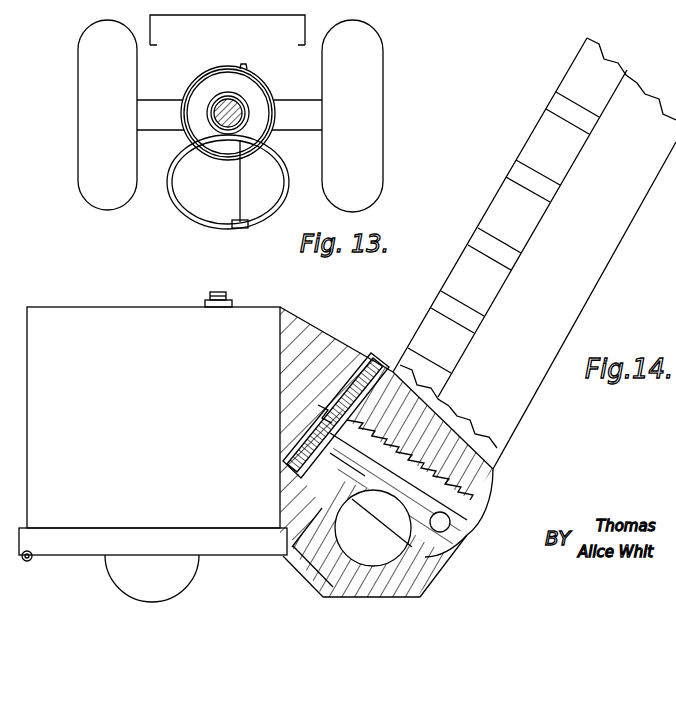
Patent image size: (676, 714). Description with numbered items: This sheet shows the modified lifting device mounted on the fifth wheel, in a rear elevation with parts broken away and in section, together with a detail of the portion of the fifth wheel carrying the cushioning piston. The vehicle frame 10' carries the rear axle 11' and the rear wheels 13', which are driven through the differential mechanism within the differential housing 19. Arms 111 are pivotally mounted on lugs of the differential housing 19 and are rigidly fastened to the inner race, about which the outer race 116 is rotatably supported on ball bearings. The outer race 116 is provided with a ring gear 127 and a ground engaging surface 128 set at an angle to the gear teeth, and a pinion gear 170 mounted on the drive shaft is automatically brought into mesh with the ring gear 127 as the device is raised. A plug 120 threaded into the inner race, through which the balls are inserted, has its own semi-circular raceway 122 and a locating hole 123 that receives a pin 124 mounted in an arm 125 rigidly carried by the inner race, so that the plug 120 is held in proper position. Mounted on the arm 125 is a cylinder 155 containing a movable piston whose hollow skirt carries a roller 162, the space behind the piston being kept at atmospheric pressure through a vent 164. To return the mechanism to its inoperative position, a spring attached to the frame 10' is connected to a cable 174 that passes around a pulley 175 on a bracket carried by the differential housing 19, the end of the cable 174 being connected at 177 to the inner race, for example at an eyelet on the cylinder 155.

In FIG. 13, the frame 10' is at (294, 27).
In FIG. 13, the rear wheels 13' is at (258, 116).
In FIG. 13, the cable 174 is at (247, 63).
In FIG. 13, the pulley 175 is at (247, 68).
In FIG. 13, the differential housing 19 is at (275, 83).
In FIG. 13, the rear axle 11' is at (311, 113).
In FIG. 13, the pinion gear 170 is at (275, 127).
In FIG. 13, the arms 111 is at (275, 146).
In FIG. 13, the outer race 116 is at (290, 155).
In FIG. 14, the outer race 116 is at (504, 440).
In FIG. 13, the cylinder 155 is at (270, 218).
In FIG. 14, the cylinder 155 is at (94, 306).
In FIG. 14, the vent 164 is at (205, 303).
In FIG. 14, the arm 125 is at (283, 306).
In FIG. 14, the locating hole 123 is at (313, 415).
In FIG. 14, the pin 124 is at (372, 362).
In FIG. 14, the ring gear 127 is at (445, 283).
In FIG. 14, the plug 120 is at (457, 513).
In FIG. 14, the semi-circular raceway 122 is at (420, 548).
In FIG. 14, the ground engaging surface 128 is at (403, 602).
In FIG. 14, the cable connection 177 is at (35, 564).
In FIG. 14, the roller 162 is at (112, 587).